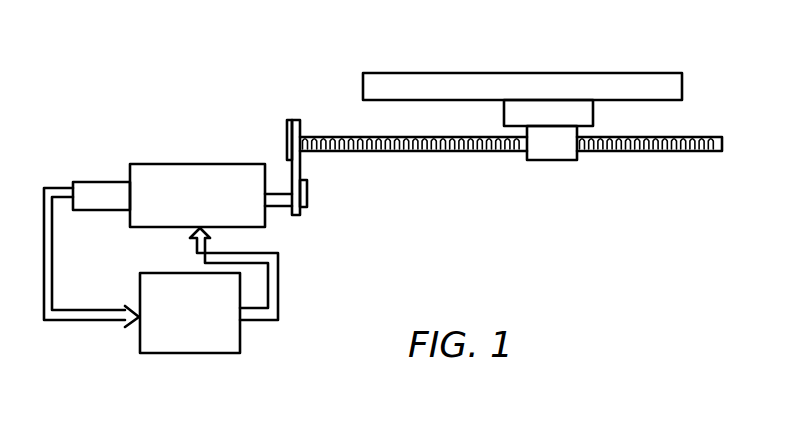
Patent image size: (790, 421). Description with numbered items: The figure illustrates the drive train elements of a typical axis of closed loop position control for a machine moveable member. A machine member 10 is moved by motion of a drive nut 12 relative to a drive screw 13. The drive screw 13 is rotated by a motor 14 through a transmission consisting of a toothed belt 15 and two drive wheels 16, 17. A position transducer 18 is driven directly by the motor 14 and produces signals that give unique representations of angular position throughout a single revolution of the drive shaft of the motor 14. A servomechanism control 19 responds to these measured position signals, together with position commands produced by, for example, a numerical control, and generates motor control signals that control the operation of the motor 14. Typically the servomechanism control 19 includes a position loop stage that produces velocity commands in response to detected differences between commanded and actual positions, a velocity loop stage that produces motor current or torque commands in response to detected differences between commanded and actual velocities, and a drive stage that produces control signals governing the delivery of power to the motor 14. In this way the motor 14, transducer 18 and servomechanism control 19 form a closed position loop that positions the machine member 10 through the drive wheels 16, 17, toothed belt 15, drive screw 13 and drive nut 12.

The machine member 10 is at (385, 74).
The drive nut 12 is at (553, 160).
The drive screw 13 is at (418, 152).
The motor 14 is at (160, 172).
The toothed belt 15 is at (302, 164).
The drive wheel 16 is at (308, 205).
The drive wheel 17 is at (288, 140).
The position transducer 18 is at (100, 190).
The servomechanism control 19 is at (211, 333).